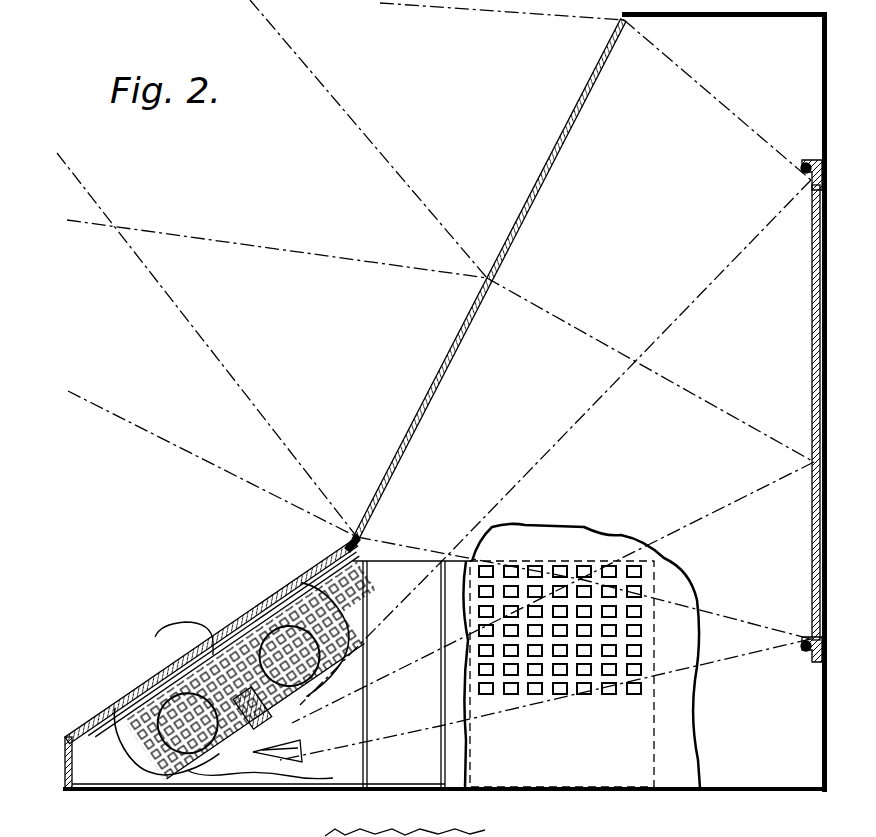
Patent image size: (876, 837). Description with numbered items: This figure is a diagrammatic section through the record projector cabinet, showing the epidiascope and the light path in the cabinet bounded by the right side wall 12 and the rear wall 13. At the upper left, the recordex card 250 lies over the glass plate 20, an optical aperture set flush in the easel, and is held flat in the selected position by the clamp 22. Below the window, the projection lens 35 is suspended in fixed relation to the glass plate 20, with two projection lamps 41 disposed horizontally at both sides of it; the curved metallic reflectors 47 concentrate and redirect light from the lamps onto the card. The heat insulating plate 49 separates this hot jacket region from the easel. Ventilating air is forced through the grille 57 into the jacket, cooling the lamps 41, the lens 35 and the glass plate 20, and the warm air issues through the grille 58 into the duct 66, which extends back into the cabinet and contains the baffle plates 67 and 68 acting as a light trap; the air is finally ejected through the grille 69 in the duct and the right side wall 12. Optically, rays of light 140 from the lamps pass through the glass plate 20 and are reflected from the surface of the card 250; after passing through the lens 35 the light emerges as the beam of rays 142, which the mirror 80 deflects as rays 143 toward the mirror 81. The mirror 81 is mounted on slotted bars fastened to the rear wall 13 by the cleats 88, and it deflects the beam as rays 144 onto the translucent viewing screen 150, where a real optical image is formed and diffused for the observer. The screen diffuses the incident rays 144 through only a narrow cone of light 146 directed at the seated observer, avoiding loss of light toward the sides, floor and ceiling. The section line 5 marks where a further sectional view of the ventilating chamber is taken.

The section line 5- 5 is at (360, 504).
The right side wall 12 is at (562, 674).
The rear wall 13 is at (822, 738).
The glass plate 20 is at (188, 722).
The clamp 22 is at (163, 638).
The projection lens 35 is at (253, 727).
The projection lamps 41 is at (128, 737).
The metallic reflectors 47 is at (182, 752).
The heat insulating plate 49 is at (88, 727).
The grille 57 is at (290, 657).
The grille 58 is at (345, 622).
The duct 66 is at (395, 558).
The baffle plate 67 is at (363, 710).
The baffle plate 68 is at (441, 635).
The grille 69 is at (648, 612).
The mirror 80 is at (292, 740).
The mirror 81 is at (812, 548).
The cleats 88 is at (805, 160).
The rays of light 140 is at (250, 637).
The rays 142 is at (292, 720).
The rays 143 is at (718, 660).
The rays 144 is at (714, 100).
The cone of light 146 is at (495, 14).
The viewing screen 150 is at (425, 418).
The recordex card 250 is at (150, 672).